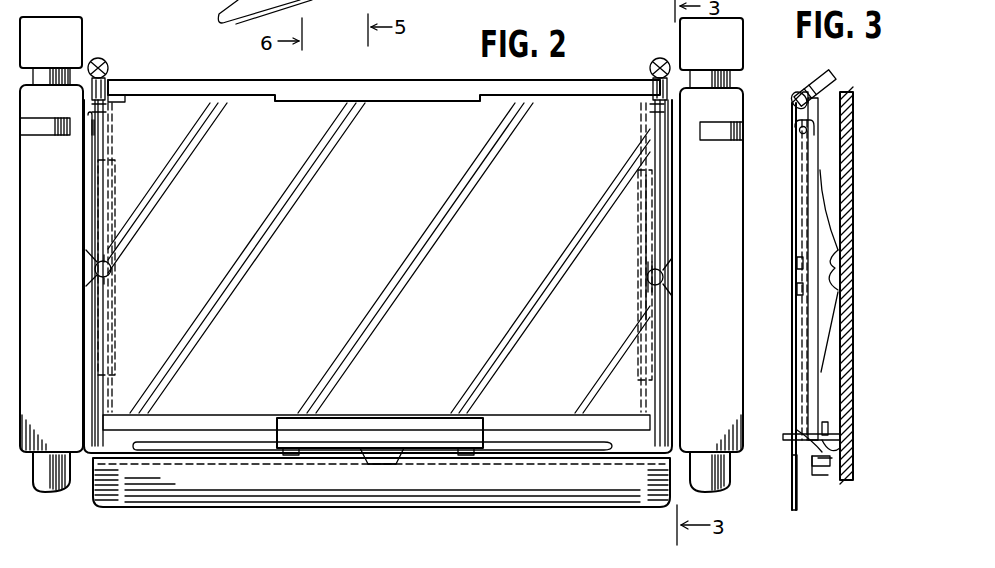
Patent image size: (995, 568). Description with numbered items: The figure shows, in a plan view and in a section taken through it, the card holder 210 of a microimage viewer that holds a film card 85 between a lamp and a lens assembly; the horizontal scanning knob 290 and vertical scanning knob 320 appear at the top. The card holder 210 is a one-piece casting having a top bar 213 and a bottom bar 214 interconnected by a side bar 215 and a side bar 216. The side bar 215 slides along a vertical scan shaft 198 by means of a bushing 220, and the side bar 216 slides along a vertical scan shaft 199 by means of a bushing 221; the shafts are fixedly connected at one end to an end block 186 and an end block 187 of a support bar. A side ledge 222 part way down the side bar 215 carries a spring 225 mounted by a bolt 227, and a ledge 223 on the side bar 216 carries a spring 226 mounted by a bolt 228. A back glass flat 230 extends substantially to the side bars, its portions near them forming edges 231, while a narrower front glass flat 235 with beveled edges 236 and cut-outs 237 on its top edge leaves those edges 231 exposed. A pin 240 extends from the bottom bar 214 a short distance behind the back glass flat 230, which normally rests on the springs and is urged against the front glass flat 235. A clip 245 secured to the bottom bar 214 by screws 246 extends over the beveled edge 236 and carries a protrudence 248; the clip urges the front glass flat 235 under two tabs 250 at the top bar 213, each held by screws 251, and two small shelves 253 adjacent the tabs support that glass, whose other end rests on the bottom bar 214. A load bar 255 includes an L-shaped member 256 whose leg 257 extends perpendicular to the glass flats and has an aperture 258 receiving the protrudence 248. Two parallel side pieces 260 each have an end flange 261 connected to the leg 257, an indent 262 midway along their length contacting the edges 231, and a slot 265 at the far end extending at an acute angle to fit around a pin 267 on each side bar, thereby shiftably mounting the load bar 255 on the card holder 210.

In FIG. 3, the film card 85 is at (810, 395).
In FIG. 2, the end block 186 is at (735, 48).
In FIG. 2, the end block 187 is at (52, 30).
In FIG. 2, the vertical scan shaft 198 is at (735, 480).
In FIG. 2, the vertical scan shaft 199 is at (43, 478).
In FIG. 2, the card holder 210 is at (225, 71).
In FIG. 2, the top bar 213 is at (420, 86).
In FIG. 3, the top bar 213 is at (836, 80).
In FIG. 2, the bottom bar 214 is at (588, 442).
In FIG. 3, the bottom bar 214 is at (790, 441).
In FIG. 2, the side bar 215 is at (726, 236).
In FIG. 2, the side bar 216 is at (68, 229).
In FIG. 2, the bushing 220 is at (720, 131).
In FIG. 2, the bushing 221 is at (45, 128).
In FIG. 2, the side ledge 222 is at (646, 130).
In FIG. 3, the side ledge 222 is at (850, 320).
In FIG. 2, the ledge 223 is at (113, 142).
In FIG. 2, the spring 225 is at (640, 190).
In FIG. 3, the spring 225 is at (826, 176).
In FIG. 2, the spring 226 is at (118, 195).
In FIG. 2, the bolt 227 is at (652, 277).
In FIG. 3, the bolt 227 is at (840, 290).
In FIG. 2, the bolt 228 is at (115, 283).
In FIG. 3, the back glass flat 230 is at (813, 107).
In FIG. 2, the edges 231 is at (658, 148).
In FIG. 2, the front glass flat 235 is at (378, 288).
In FIG. 3, the front glass flat 235 is at (795, 112).
In FIG. 2, the beveled edges 236 is at (550, 110).
In FIG. 2, the cut-outs 237 is at (422, 100).
In FIG. 3, the pin 240 is at (829, 427).
In FIG. 2, the clip 245 is at (390, 440).
In FIG. 3, the clip 245 is at (822, 452).
In FIG. 2, the screws 246 is at (295, 446).
In FIG. 3, the screws 246 is at (836, 445).
In FIG. 2, the protrudence 248 is at (377, 464).
In FIG. 3, the protrudence 248 is at (832, 458).
In FIG. 2, the tabs 250 is at (655, 85).
In FIG. 2, the screws 251 is at (116, 53).
In FIG. 2, the shelves 253 is at (96, 108).
In FIG. 2, the load bar 255 is at (535, 511).
In FIG. 2, the L-shaped member 256 is at (190, 490).
In FIG. 3, the L-shaped member 256 is at (800, 470).
In FIG. 2, the leg 257 is at (246, 466).
In FIG. 3, the leg 257 is at (820, 470).
In FIG. 2, the aperture 258 is at (400, 465).
In FIG. 2, the side pieces 260 is at (88, 233).
In FIG. 2, the end flange 261 is at (125, 466).
In FIG. 2, the indent 262 is at (111, 268).
In FIG. 3, the slot 265 is at (802, 134).
In FIG. 2, the pin 267 is at (93, 128).
In FIG. 3, the pin 267 is at (797, 130).
In FIG. 2, the horizontal scanning knob 290 is at (396, 0).
In FIG. 2, the vertical scanning knob 320 is at (333, 0).